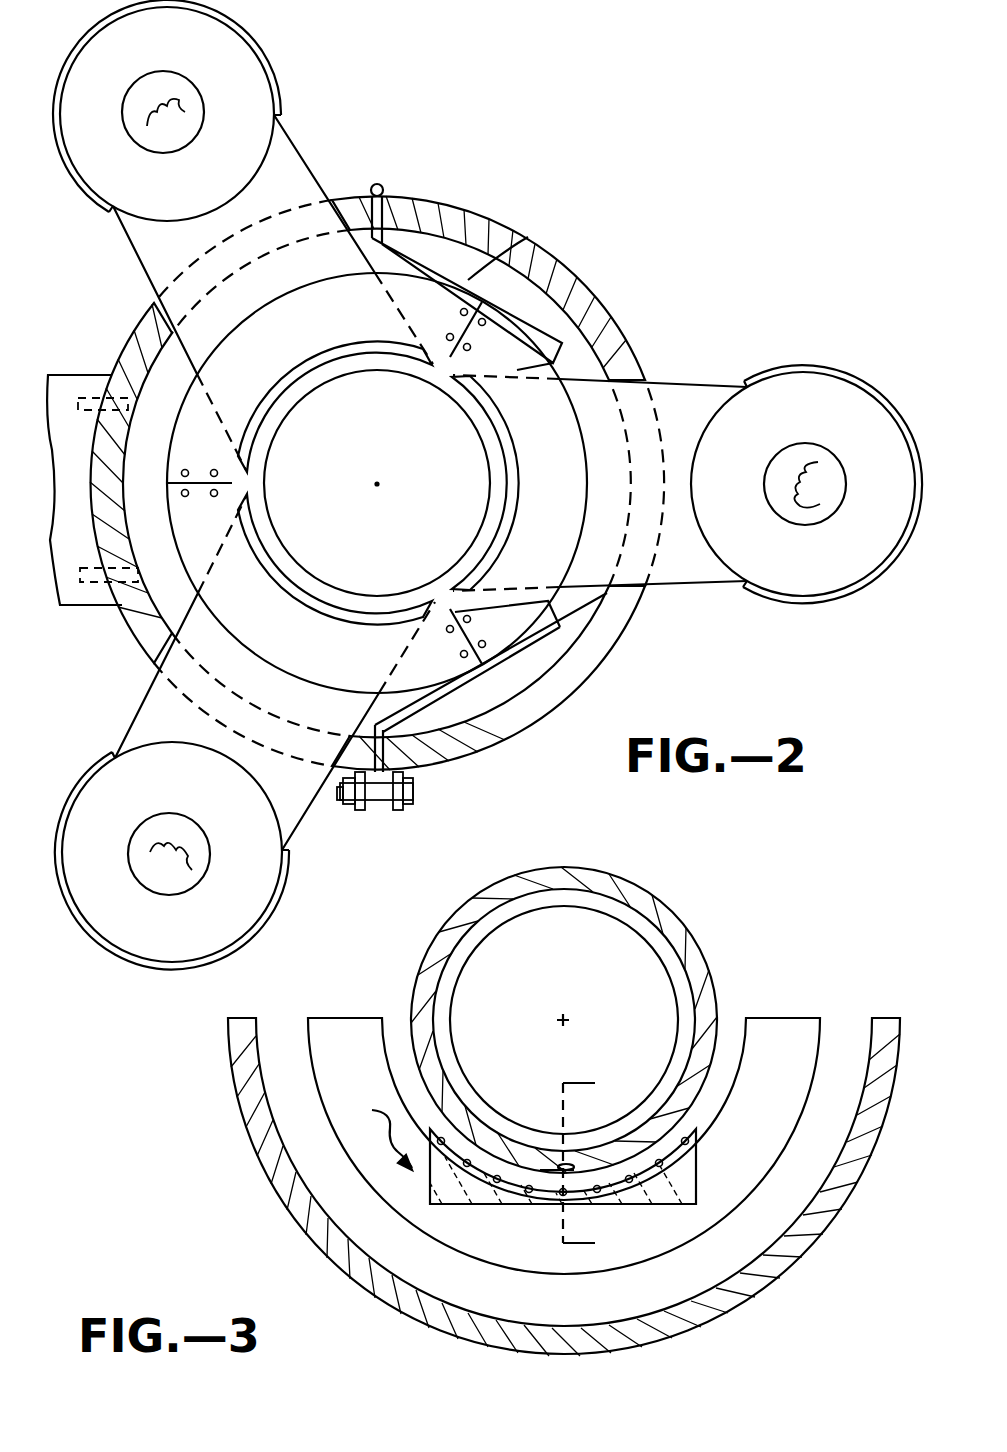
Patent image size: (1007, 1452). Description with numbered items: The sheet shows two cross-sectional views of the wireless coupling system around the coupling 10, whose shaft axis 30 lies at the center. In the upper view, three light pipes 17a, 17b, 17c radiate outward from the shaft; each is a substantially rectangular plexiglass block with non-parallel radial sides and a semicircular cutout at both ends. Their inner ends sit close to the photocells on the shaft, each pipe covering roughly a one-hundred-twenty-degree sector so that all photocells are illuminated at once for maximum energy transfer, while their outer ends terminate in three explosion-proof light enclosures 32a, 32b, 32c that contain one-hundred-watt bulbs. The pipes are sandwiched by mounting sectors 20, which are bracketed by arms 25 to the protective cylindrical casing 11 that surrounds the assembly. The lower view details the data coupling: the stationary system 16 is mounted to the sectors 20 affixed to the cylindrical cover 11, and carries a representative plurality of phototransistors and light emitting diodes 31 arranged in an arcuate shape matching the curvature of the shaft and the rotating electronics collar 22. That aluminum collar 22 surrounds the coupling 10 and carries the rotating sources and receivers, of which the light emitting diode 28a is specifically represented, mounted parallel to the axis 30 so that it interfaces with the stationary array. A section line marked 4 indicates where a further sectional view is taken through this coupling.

In FIG. 2, the coupling 10 is at (392, 445).
In FIG. 3, the coupling 10 is at (574, 980).
In FIG. 2, the protective cylindrical casing 11 is at (487, 223).
In FIG. 3, the protective cylindrical casing 11 is at (283, 1180).
In FIG. 3, the stationary system 16 is at (376, 1135).
In FIG. 2, the light pipe 17a is at (306, 168).
In FIG. 2, the light pipe 17b is at (680, 583).
In FIG. 2, the light pipe 17c is at (142, 706).
In FIG. 2, the sectors 20 is at (588, 297).
In FIG. 3, the sectors 20 is at (786, 1073).
In FIG. 3, the cylindrical collar 22 is at (412, 978).
In FIG. 2, the arms 25 is at (470, 280).
In FIG. 3, the light emitting diode 28a is at (562, 1160).
In FIG. 3, the axis 30 is at (569, 1021).
In FIG. 3, the phototransistors and light emitting diodes 31 is at (532, 1235).
In FIG. 2, the explosion-proof light enclosure 32a is at (278, 92).
In FIG. 2, the explosion-proof light enclosure 32b is at (805, 365).
In FIG. 2, the explosion-proof light enclosure 32c is at (288, 870).
In FIG. 3, the section line 4- 4 is at (588, 1169).